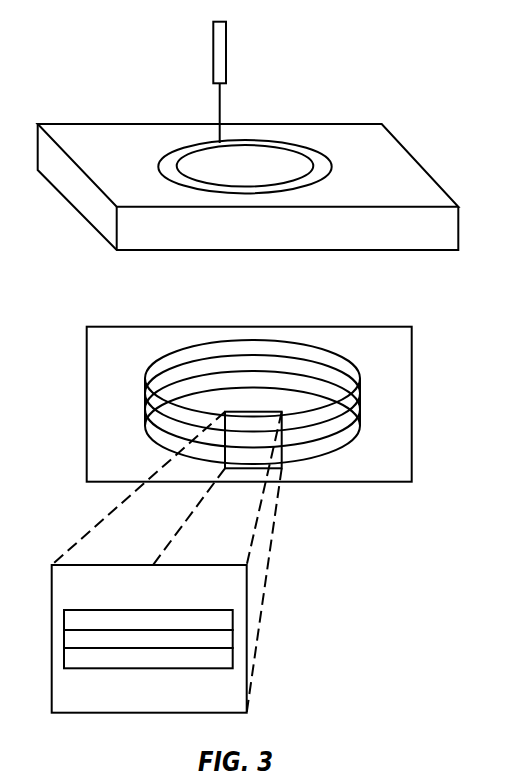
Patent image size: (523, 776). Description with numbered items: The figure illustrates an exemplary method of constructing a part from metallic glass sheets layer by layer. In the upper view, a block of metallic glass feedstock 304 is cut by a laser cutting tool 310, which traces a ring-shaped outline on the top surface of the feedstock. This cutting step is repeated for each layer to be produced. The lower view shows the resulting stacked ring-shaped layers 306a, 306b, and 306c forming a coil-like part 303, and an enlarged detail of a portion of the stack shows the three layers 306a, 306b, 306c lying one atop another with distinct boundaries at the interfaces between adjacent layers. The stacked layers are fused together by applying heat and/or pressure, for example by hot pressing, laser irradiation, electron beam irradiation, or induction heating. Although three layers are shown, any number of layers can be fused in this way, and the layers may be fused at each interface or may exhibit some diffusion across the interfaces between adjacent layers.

The coil assembly 303 is at (416, 476).
The metallic glass feedstock 304 is at (353, 138).
The layer 306a is at (136, 434).
The layer 306b is at (136, 408).
The layer 306c is at (136, 388).
The laser cutting tool 310 is at (227, 22).